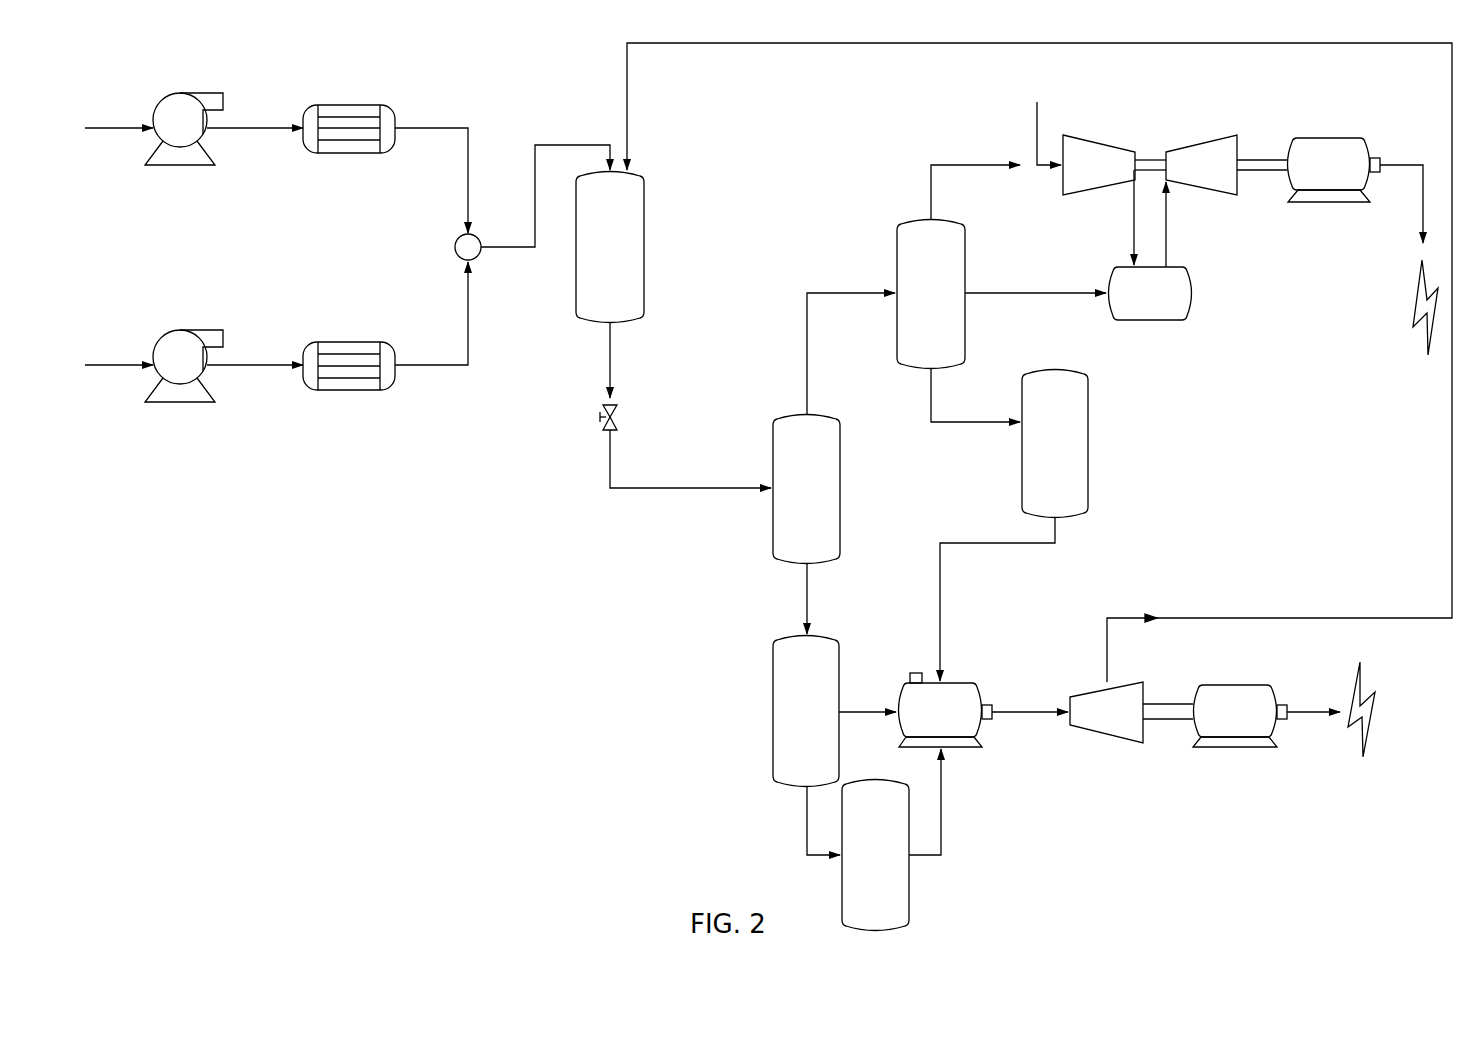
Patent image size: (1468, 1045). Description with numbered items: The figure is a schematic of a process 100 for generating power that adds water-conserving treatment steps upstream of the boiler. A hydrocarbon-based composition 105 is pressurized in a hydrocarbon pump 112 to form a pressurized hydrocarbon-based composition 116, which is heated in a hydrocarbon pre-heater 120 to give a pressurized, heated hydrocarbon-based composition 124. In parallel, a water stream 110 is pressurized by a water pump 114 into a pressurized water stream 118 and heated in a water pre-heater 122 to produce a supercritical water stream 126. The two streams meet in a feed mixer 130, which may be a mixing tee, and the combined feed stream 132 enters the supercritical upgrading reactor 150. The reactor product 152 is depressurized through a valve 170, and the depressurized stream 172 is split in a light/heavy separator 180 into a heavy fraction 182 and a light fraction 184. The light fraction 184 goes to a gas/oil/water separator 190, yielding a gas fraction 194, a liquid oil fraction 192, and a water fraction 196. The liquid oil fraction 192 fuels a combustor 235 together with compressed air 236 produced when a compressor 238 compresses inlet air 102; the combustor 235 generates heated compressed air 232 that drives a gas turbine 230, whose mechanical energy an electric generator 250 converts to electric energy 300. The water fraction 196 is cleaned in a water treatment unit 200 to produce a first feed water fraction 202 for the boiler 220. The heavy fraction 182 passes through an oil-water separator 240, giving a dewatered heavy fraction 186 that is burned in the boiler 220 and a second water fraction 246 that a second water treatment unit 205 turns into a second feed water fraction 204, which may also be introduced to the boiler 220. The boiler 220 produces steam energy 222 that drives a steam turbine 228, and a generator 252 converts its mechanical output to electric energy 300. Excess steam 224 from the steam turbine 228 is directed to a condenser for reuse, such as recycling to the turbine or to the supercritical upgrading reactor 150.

The process 100 is at (400, 707).
The inlet air 102 is at (1037, 103).
The hydrocarbon-based composition 105 is at (118, 127).
The water stream 110 is at (118, 364).
The hydrocarbon pump 112 is at (185, 93).
The water pump 114 is at (185, 330).
The pressurized hydrocarbon-based composition 116 is at (265, 127).
The pressurized water stream 118 is at (265, 364).
The hydrocarbon pre-heater 120 is at (348, 105).
The water pre-heater 122 is at (348, 342).
The pressurized, heated hydrocarbon-based composition 124 is at (445, 128).
The supercritical water stream 126 is at (440, 366).
The feed mixer 130 is at (455, 247).
The combined feed stream 132 is at (556, 145).
The supercritical upgrading reactor 150 is at (644, 245).
The reactor product 152 is at (610, 355).
The valve 170 is at (604, 426).
The depressurized stream 172 is at (712, 487).
The light/heavy separator 180 is at (773, 525).
The heavy fraction 182 is at (807, 593).
The light fraction 184 is at (835, 292).
The dewatered heavy fraction 186 is at (858, 711).
The gas/oil/water separator 190 is at (965, 249).
The liquid oil fraction 192 is at (1038, 294).
The gas fraction 194 is at (966, 164).
The water fraction 196 is at (932, 392).
The water treatment unit 200 is at (1022, 465).
The first feed water fraction 202 is at (940, 584).
The second feed water fraction 204 is at (941, 818).
The second water treatment unit 205 is at (909, 891).
The boiler 220 is at (968, 682).
The energy 222 is at (1035, 713).
The excess steam 224 is at (828, 43).
The steam turbine 228 is at (1107, 741).
The gas turbine 230 is at (1200, 140).
The heated compressed air 232 is at (1167, 228).
The combustor 235 is at (1150, 320).
The compressed air 236 is at (1133, 215).
The compressor 238 is at (1080, 135).
The oil-water separator 240 is at (773, 705).
The second water fraction 246 is at (807, 820).
The electric generator 250 is at (1326, 138).
The generator 252 is at (1240, 685).
The electric energy 300 is at (1413, 290).